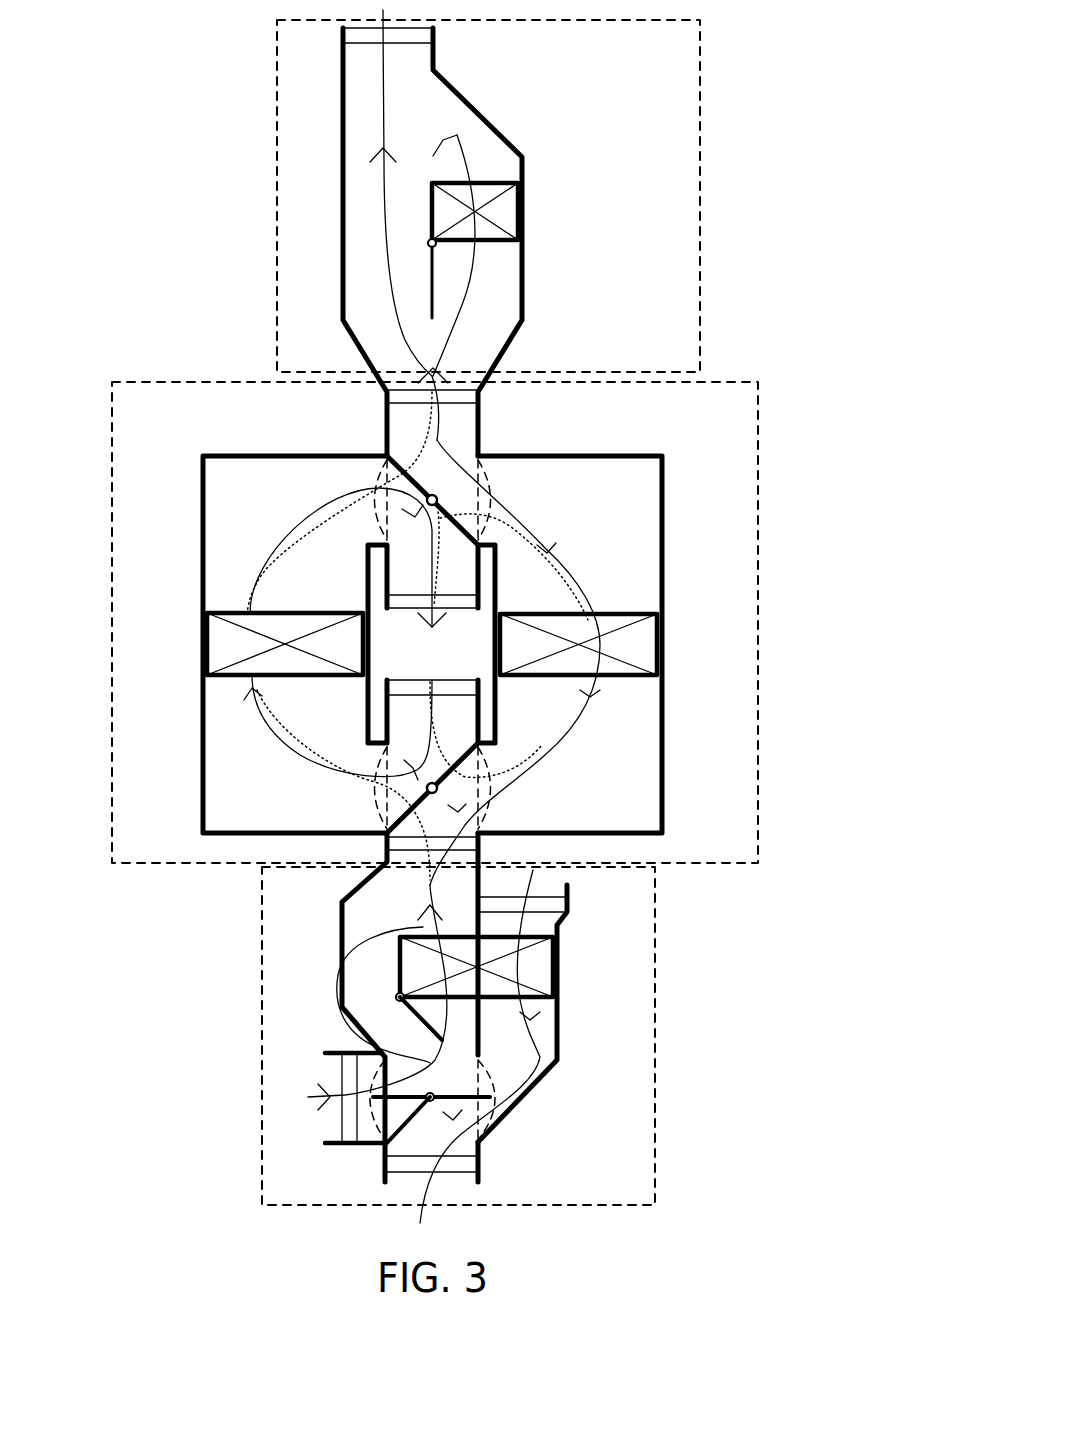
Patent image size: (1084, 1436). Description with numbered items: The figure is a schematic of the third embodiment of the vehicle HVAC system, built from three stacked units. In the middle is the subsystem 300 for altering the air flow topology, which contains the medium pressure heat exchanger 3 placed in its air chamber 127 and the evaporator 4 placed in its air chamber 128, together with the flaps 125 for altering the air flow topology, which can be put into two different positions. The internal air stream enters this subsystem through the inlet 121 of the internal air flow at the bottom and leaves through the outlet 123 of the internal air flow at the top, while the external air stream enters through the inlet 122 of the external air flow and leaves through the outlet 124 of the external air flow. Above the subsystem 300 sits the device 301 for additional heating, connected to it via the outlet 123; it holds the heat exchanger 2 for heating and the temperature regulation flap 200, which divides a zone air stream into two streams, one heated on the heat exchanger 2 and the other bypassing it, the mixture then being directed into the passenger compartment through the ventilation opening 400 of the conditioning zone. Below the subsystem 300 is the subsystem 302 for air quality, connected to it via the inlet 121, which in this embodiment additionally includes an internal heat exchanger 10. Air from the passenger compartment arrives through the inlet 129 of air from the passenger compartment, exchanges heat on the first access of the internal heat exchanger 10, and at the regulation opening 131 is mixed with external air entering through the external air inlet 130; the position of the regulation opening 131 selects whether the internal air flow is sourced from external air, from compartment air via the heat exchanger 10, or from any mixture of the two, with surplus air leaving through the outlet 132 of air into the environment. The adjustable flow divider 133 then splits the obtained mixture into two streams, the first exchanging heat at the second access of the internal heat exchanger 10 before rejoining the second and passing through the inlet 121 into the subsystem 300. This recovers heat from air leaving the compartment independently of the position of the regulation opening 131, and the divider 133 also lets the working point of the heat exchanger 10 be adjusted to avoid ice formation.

The heat exchanger for heating 2 is at (502, 214).
The medium pressure heat exchanger 3 is at (607, 633).
The evaporator 4 is at (240, 647).
The internal heat exchanger 10 is at (520, 967).
The inlet of the internal air flow 121 is at (457, 843).
The inlet of the external air flow 122 is at (403, 598).
The outlet of the internal air flow 123 is at (471, 389).
The outlet of the external air flow 124 is at (410, 686).
The flaps for altering the air flow topology 125 is at (385, 474).
The air chamber of the medium pressure heat exchanger 127 is at (592, 788).
The air chamber of the evaporator 128 is at (267, 753).
The inlet of air from the passenger compartment 129 is at (530, 905).
The inlet of external air 130 is at (347, 1073).
The regulation opening for mixing the external air and passenger compartment air 131 is at (477, 1142).
The outlet of air into the environment 132 is at (397, 1165).
The adjustable flow divider 133 is at (478, 1018).
The temperature regulation flap 200 is at (437, 270).
The subsystem for air flow altering 300 is at (180, 448).
The additional heating device 301 is at (313, 140).
The subsystem for air quality 302 is at (298, 957).
The ventilation opening of the conditioning zone 400 is at (413, 33).